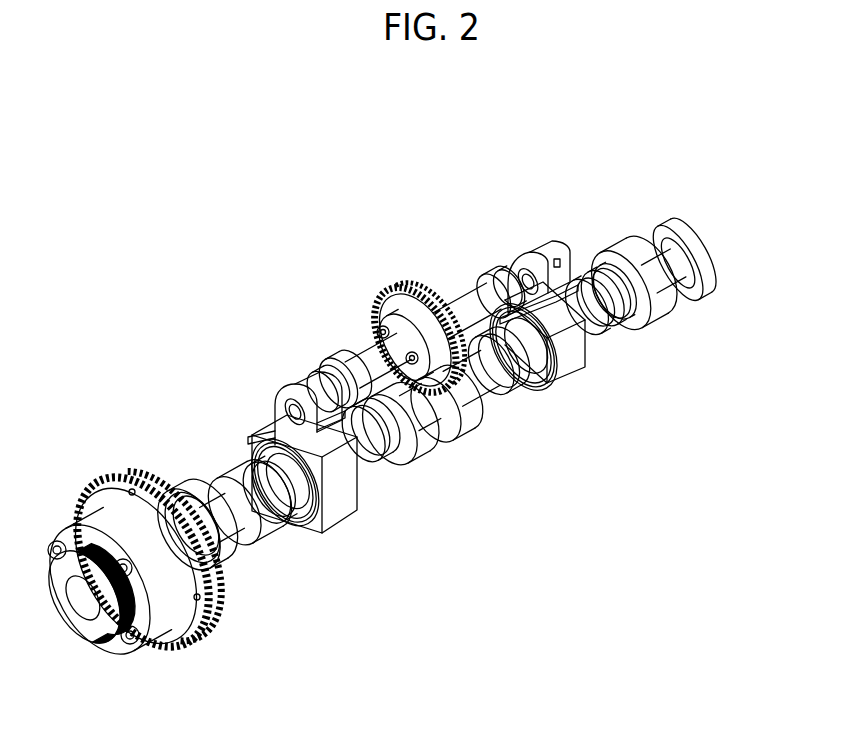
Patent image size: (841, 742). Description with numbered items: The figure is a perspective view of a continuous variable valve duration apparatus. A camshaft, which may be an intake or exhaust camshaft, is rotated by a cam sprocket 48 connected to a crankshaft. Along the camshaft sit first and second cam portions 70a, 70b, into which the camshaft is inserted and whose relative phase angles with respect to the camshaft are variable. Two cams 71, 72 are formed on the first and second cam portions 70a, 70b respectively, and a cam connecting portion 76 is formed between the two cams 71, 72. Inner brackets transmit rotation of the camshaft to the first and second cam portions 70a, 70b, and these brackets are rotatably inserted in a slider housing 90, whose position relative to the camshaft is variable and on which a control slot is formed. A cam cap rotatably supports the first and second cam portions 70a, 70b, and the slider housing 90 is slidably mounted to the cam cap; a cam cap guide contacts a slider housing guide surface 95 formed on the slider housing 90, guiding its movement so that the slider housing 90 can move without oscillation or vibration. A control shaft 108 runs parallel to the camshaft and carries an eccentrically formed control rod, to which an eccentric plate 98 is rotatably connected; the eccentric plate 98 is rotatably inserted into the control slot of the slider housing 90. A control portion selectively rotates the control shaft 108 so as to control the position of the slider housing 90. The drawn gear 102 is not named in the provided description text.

The cam sprocket 48 is at (178, 655).
The first cam portion 70a is at (285, 556).
The second cam portion 70b is at (434, 482).
The cam 71 is at (245, 530).
The cam 72 is at (300, 524).
The cam connecting portion 76 is at (249, 470).
The slider housing 90 is at (322, 398).
The slider housing guide surface 95 is at (328, 490).
The eccentric plate 98 is at (304, 400).
The drive gear 102 is at (407, 283).
The control shaft 108 is at (367, 357).